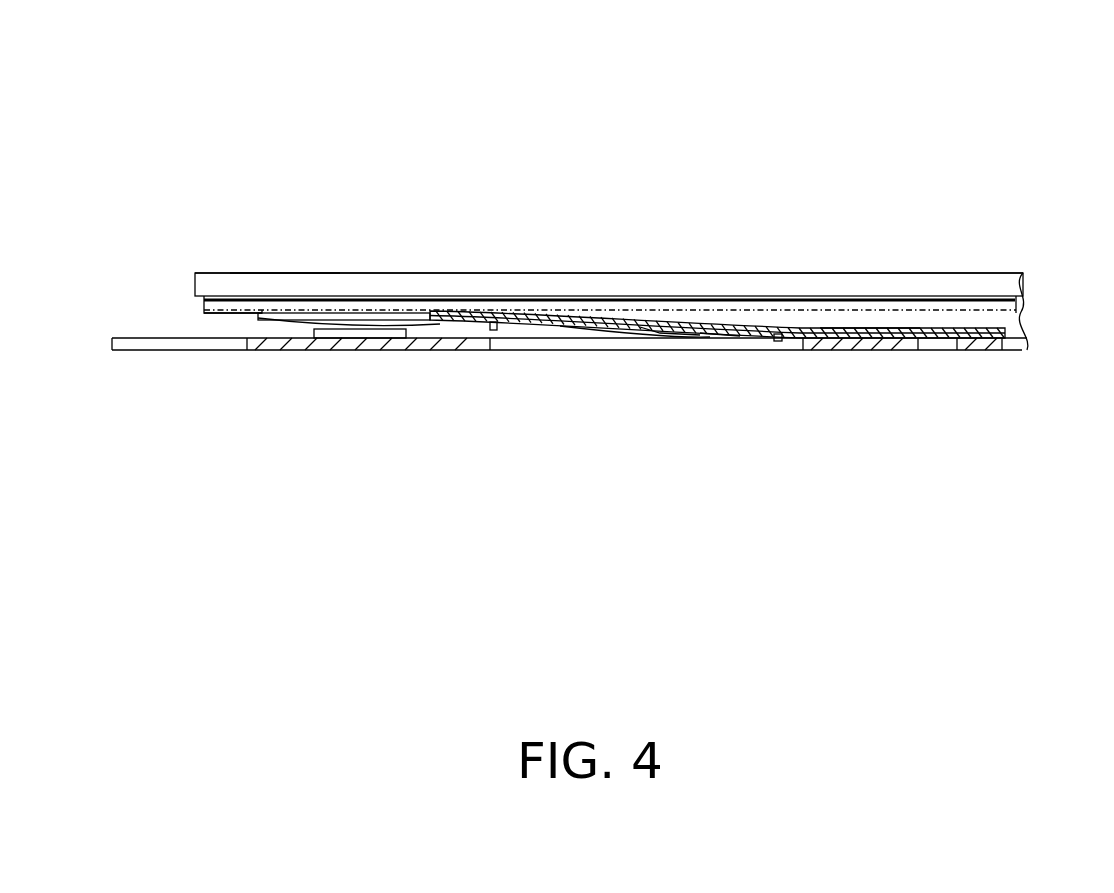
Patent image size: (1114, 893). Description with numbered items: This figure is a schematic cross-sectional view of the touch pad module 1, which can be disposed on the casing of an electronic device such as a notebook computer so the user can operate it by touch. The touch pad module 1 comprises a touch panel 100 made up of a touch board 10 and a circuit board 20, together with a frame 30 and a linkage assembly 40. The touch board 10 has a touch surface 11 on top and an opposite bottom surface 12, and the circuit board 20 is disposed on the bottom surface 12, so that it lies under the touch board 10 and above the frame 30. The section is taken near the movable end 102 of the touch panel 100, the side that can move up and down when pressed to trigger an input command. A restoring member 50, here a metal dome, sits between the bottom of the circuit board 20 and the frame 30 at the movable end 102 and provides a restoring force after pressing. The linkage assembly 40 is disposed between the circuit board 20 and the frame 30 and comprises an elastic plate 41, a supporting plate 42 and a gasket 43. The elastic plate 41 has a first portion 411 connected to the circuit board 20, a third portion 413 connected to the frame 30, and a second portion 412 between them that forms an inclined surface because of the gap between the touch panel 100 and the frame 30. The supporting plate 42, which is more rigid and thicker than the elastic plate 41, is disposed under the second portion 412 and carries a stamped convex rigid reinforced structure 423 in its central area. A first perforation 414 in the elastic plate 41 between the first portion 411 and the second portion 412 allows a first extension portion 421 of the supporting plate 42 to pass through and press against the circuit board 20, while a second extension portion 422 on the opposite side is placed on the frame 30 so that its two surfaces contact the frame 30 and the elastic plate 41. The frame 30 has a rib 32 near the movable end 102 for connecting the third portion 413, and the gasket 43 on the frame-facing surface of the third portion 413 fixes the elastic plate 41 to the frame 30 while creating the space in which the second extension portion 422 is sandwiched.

The touch pad module 1 is at (232, 96).
The touch panel 100 is at (120, 220).
The touch board 10 is at (207, 282).
The touch surface 11 is at (938, 272).
The movable end 102 is at (280, 262).
The bottom surface 12 is at (1007, 298).
The circuit board 20 is at (205, 300).
The frame 30 is at (128, 344).
The rib 32 is at (905, 342).
The gasket 43 is at (967, 340).
The linkage assembly 40 is at (596, 317).
The elastic plate 41 is at (643, 320).
The supporting plate 42 is at (583, 327).
The first portion 411 is at (217, 317).
The second portion 412 is at (709, 328).
The third portion 413 is at (872, 333).
The first perforation 414 is at (399, 311).
The first extension portion 421 is at (440, 322).
The second extension portion 422 is at (837, 334).
The rigid reinforced structure 423 is at (641, 328).
The restoring member 50 is at (347, 323).